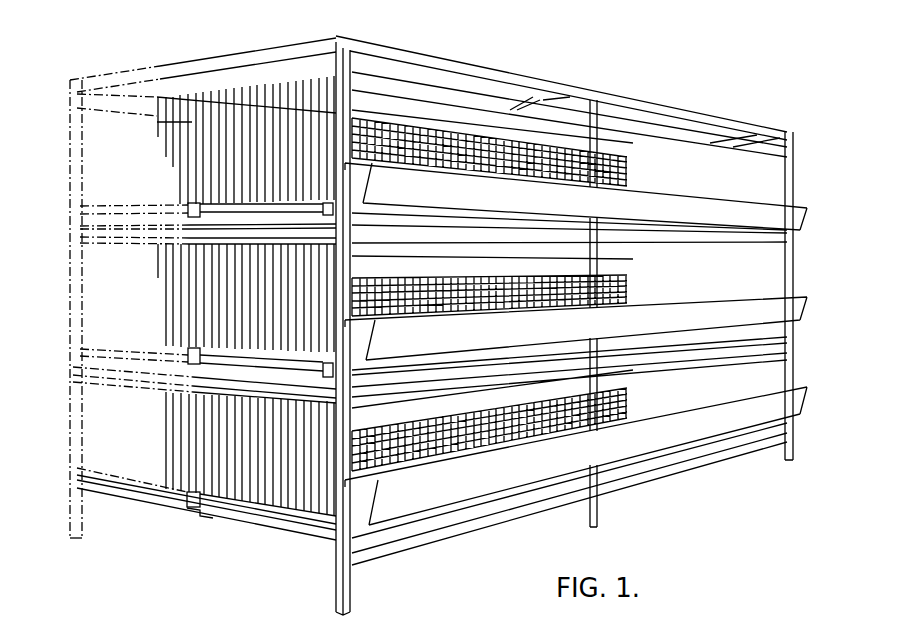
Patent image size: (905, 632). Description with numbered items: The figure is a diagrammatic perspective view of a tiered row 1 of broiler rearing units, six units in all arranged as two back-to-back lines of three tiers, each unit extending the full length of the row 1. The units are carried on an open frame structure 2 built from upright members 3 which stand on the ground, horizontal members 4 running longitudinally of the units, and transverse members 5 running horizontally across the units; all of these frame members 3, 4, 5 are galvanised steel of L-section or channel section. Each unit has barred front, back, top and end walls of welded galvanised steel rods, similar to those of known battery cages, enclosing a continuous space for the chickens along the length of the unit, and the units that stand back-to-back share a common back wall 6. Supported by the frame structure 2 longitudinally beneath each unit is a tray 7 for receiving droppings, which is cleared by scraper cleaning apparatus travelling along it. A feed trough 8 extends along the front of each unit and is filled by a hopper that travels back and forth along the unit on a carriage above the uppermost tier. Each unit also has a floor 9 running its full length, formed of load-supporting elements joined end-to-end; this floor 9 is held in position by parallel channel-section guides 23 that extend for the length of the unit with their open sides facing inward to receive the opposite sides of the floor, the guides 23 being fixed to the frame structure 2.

The cage 1 is at (267, 93).
The open frame structure 2 is at (548, 87).
The upright members 3 is at (623, 525).
The horizontal members 4 is at (537, 82).
The transverse members 5 is at (258, 56).
The common back wall 6 is at (222, 92).
The tray 7 is at (133, 230).
The feed trough 8 is at (797, 232).
The floor 9 is at (300, 200).
The channel-section guides 23 is at (418, 212).